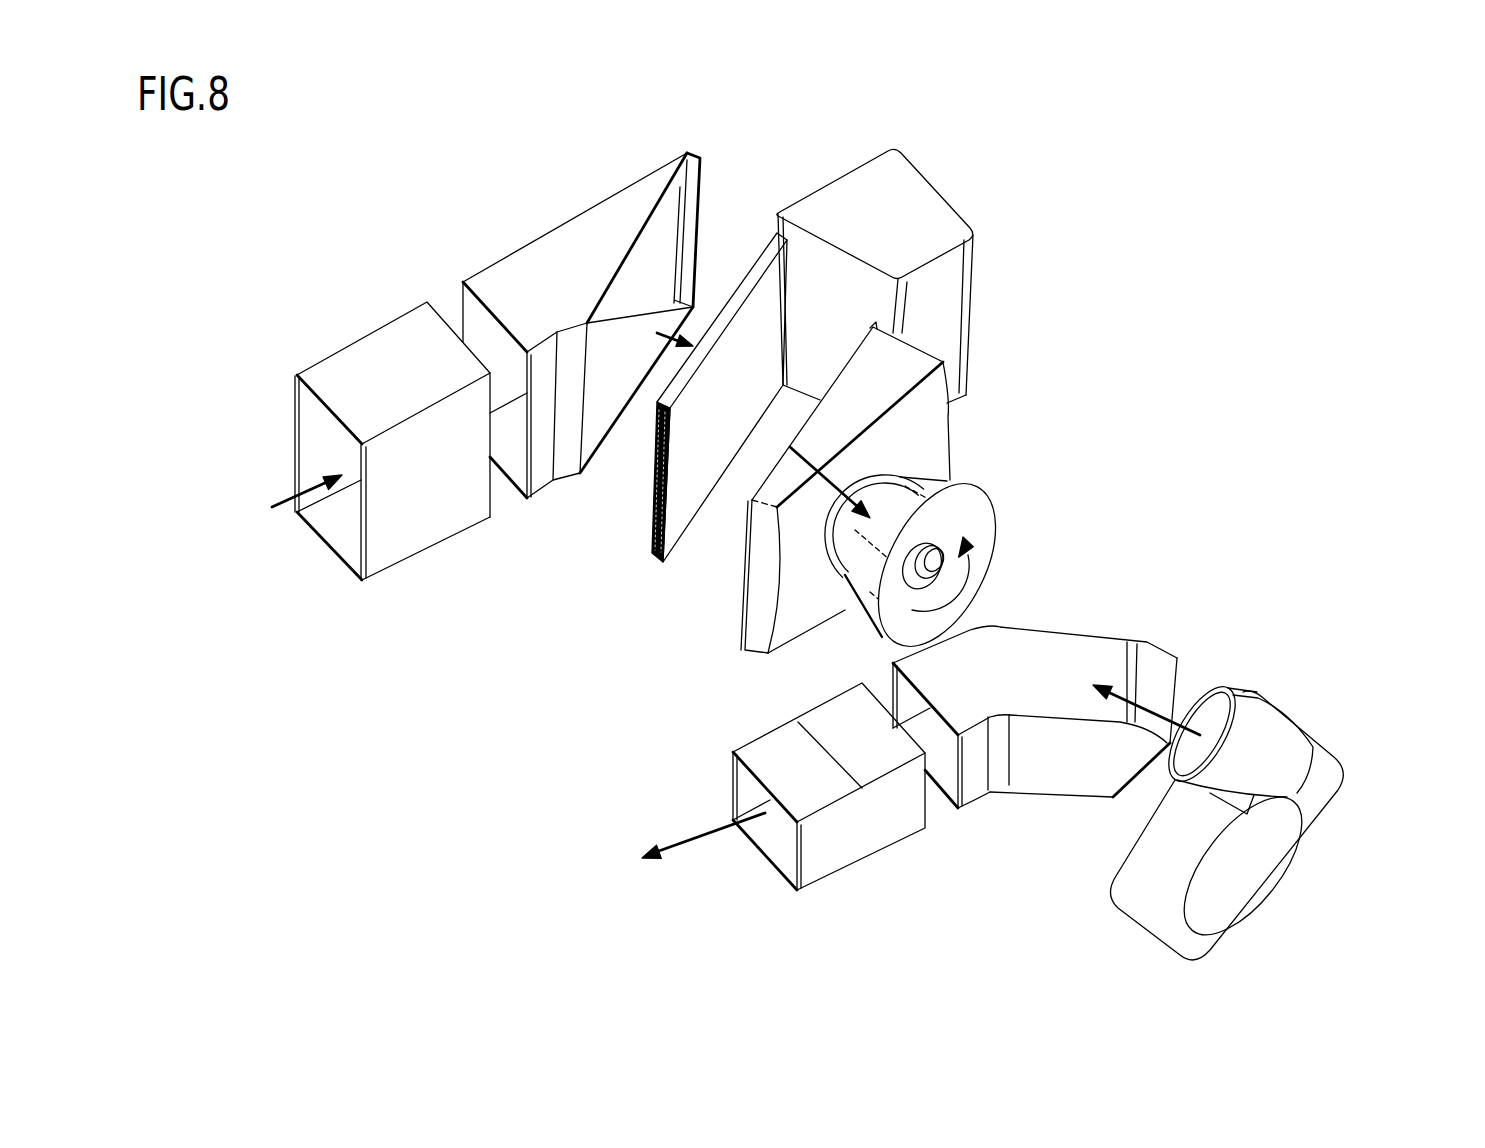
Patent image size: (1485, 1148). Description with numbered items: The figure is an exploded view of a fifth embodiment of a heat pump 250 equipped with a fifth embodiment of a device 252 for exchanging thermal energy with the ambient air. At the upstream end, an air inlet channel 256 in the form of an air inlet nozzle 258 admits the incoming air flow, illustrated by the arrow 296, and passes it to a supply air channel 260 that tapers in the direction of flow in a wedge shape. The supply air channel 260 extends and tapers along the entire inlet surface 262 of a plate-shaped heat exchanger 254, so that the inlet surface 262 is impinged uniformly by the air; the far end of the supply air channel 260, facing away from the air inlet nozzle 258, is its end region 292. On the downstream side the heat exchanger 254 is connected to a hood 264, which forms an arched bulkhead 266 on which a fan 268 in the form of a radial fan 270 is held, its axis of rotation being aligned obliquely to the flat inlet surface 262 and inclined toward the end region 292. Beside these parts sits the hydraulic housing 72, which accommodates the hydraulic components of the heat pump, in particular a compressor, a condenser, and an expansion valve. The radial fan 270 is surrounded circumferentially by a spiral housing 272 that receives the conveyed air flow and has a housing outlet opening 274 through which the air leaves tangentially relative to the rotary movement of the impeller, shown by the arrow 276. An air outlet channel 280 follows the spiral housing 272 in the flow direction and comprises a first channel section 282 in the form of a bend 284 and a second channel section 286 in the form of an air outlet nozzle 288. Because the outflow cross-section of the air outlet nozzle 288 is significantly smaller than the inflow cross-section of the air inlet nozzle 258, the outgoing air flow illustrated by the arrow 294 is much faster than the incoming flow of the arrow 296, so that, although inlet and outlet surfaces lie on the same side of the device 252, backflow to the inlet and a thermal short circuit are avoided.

The heat pump 250 is at (1076, 192).
The device for exchanging thermal energy with the ambient air 252 is at (712, 122).
The plate-shaped heat exchanger 254 is at (658, 527).
The air inlet channel 256 is at (365, 355).
The air inlet nozzle 258 is at (405, 540).
The supply air channel 260 is at (530, 268).
The inlet surface 262 is at (658, 495).
The hood 264 is at (905, 355).
The arched bulkhead 266 is at (925, 425).
The fan 268 is at (980, 522).
The radial fan 270 is at (990, 542).
The spiral housing 272 is at (1320, 818).
The housing outlet opening 274 is at (1212, 688).
The arrow 276 is at (992, 588).
The air outlet channel 280 is at (950, 848).
The first channel section 282 is at (1070, 780).
The bend 284 is at (1000, 762).
The second channel section 286 is at (764, 757).
The air outlet nozzle 288 is at (860, 840).
The end region 292 is at (680, 232).
The arrow 294 is at (715, 833).
The arrow 296 is at (277, 505).
The hydraulic housing 72 is at (937, 215).